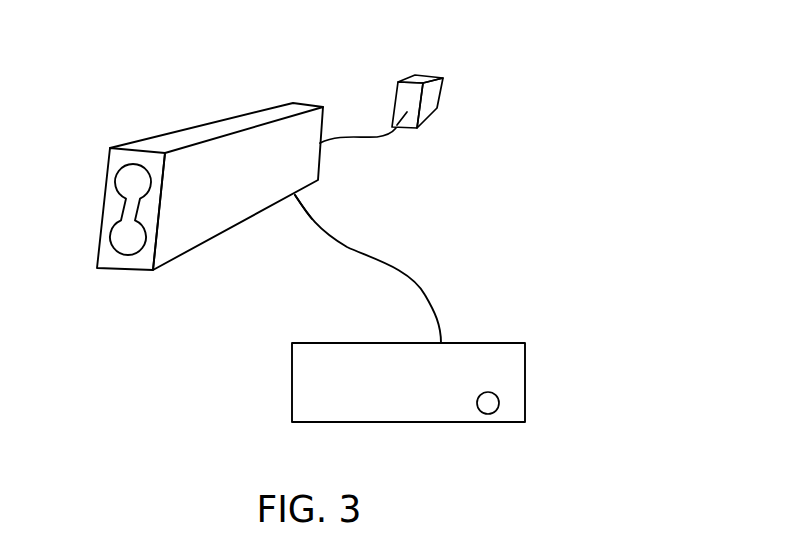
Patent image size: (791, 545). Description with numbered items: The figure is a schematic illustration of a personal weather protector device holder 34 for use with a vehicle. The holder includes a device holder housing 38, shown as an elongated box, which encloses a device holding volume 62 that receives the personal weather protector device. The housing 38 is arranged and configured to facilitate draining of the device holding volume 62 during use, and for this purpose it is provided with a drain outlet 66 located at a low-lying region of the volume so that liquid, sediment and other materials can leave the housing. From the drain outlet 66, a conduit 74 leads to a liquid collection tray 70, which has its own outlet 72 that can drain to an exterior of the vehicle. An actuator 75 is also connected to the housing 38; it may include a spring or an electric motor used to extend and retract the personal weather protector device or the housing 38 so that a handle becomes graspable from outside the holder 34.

The personal weather protector device holder 34 is at (521, 95).
The device holder housing 38 is at (137, 118).
The device holding volume 62 is at (240, 146).
The drain outlet 66 is at (305, 211).
The liquid collection tray 70 is at (400, 415).
The outlet 72 is at (498, 408).
The conduit 74 is at (345, 245).
The actuator 75 is at (428, 80).